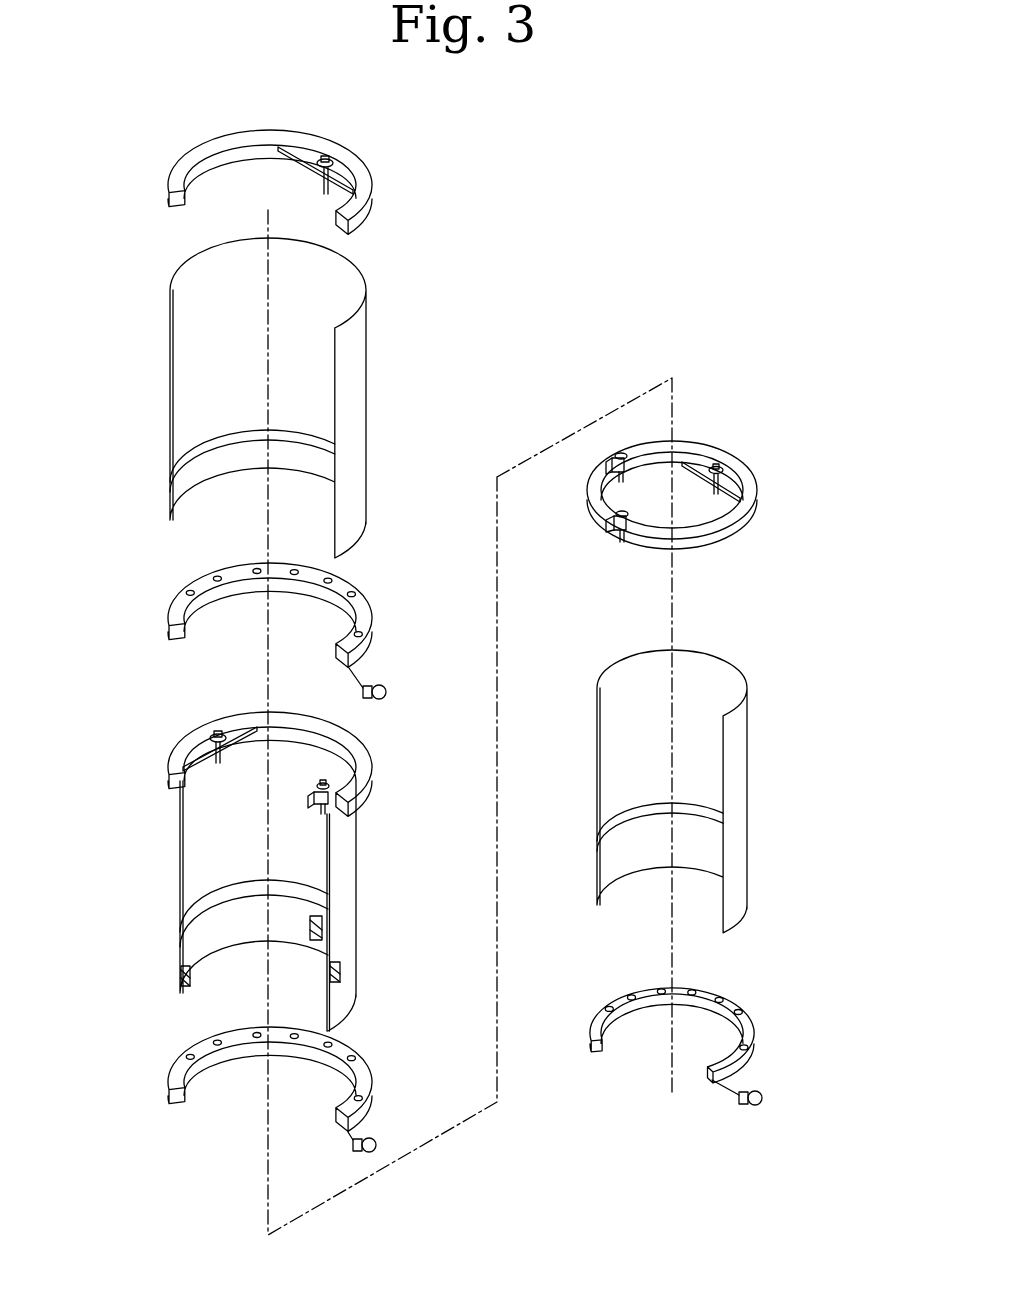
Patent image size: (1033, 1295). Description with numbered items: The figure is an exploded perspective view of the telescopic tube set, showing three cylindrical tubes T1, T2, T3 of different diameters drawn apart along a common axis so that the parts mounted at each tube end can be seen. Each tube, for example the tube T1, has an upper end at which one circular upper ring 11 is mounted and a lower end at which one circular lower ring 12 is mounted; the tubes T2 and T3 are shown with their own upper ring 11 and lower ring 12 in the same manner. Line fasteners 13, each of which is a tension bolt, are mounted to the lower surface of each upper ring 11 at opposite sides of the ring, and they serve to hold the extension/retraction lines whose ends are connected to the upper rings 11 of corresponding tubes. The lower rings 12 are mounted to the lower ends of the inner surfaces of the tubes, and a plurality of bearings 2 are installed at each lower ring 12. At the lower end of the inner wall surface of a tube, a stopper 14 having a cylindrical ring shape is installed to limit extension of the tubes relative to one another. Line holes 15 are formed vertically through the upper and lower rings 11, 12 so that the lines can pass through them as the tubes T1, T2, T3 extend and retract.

The upper ring 11 is at (170, 182).
The lower ring 12 is at (168, 615).
The line fastener 13 is at (330, 152).
The stopper 14 is at (188, 496).
The line hole 15 is at (617, 535).
The bearing 2 is at (386, 689).
The cylindrical tube T1 is at (170, 373).
The cylindrical tube T2 is at (178, 848).
The cylindrical tube T3 is at (597, 788).